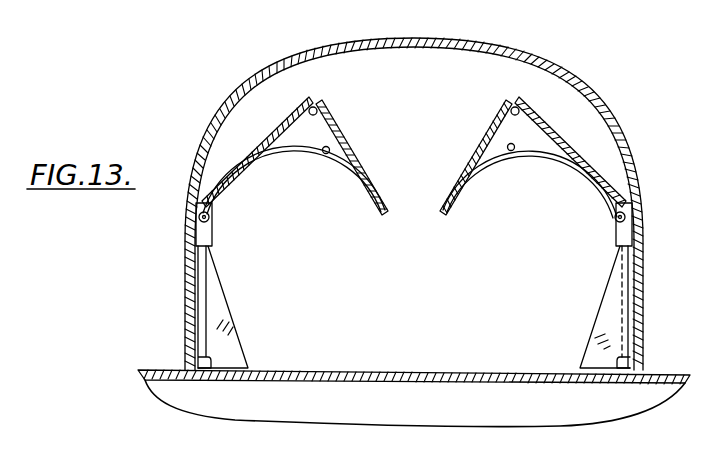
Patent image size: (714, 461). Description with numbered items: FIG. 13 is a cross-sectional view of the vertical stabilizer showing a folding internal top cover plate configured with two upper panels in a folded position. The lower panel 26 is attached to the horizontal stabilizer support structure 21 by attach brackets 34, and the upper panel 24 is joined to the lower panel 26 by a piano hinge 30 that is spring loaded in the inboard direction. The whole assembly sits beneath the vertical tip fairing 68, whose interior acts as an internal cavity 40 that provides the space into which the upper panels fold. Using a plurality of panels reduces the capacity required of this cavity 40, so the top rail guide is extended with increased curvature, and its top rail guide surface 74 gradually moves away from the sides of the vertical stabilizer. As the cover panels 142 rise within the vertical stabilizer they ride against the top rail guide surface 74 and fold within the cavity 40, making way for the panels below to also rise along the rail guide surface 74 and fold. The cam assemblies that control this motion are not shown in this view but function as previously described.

The horizontal stabilizer support structure 21 is at (383, 370).
The upper panel 24 is at (250, 157).
The lower panel 26 is at (198, 308).
The piano hinge 30 is at (306, 127).
The attach brackets 34 is at (243, 340).
The internal cavity 40 is at (422, 80).
The vertical tip fairing 68 is at (543, 64).
The top rail guide surface 74 is at (324, 154).
The cover panels 142 is at (437, 148).